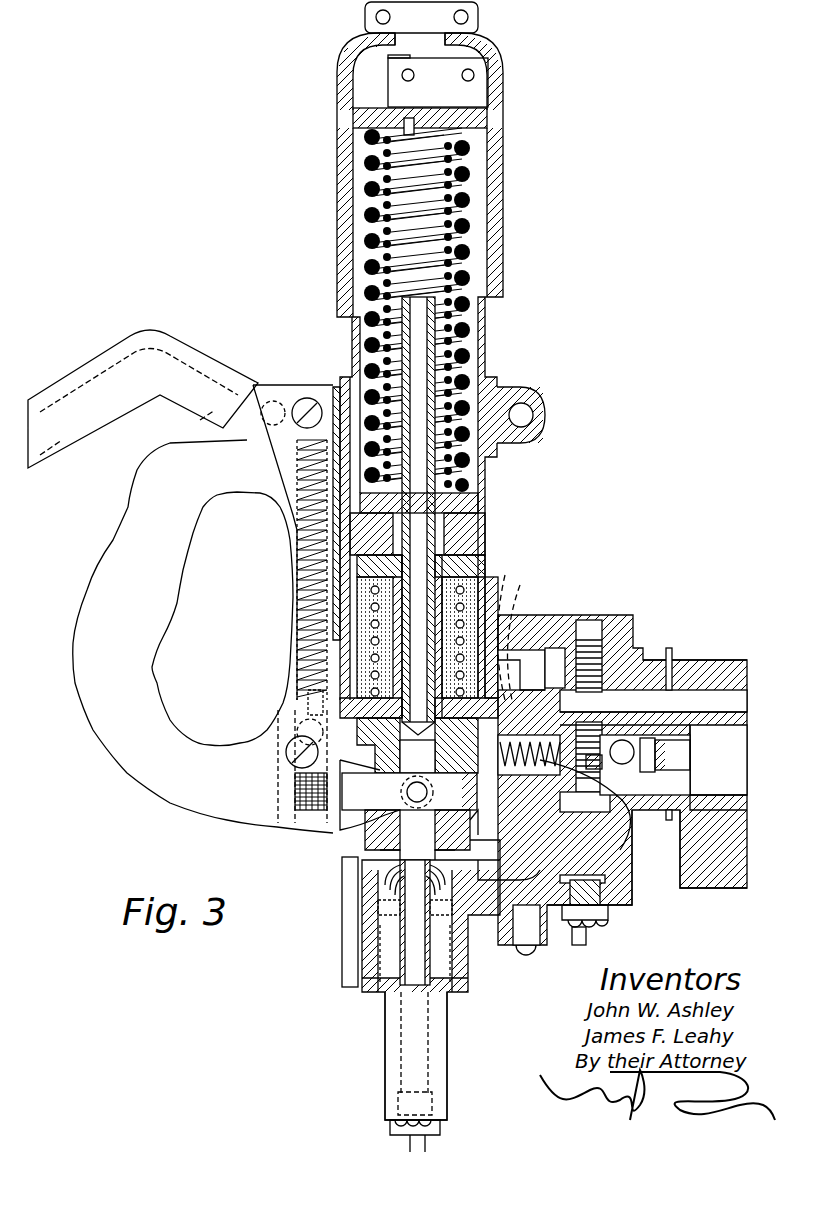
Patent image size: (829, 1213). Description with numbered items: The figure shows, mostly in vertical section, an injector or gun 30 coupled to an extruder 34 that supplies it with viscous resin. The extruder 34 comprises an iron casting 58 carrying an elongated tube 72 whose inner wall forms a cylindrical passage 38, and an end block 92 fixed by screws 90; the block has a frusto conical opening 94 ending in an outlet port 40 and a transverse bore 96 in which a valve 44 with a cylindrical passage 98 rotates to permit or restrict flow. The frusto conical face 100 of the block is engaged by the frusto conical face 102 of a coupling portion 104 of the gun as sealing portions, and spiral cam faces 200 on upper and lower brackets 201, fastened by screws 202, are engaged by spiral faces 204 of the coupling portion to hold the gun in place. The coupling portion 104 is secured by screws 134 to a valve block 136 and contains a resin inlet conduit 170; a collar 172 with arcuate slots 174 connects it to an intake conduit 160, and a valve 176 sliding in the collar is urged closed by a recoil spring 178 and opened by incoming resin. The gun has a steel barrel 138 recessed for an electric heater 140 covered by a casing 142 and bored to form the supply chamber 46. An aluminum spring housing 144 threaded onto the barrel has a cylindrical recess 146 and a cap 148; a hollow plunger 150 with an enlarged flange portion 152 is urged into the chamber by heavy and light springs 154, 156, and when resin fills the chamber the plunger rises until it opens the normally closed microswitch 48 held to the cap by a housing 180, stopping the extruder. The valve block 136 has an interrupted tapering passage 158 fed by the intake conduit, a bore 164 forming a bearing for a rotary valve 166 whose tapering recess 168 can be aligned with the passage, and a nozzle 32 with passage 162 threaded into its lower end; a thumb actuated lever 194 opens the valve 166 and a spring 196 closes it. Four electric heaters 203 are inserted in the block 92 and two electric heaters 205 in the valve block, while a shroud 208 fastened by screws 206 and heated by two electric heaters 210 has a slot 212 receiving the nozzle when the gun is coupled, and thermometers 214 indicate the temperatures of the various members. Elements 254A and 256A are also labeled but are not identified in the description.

The injector or gun 30 is at (548, 373).
The nozzle 32 is at (400, 935).
The extruder 34 is at (733, 616).
The passage 38 is at (747, 725).
The outlet port 40 is at (665, 753).
The valve 44 is at (600, 748).
The supply chamber 46 is at (478, 575).
The microswitch 48 is at (400, 127).
The iron casting 58 is at (747, 888).
The elongated tube 72 is at (748, 790).
The screws 90 is at (747, 690).
The end block 92 is at (650, 655).
The frusto conical opening 94 is at (672, 775).
The bore 96 is at (630, 760).
The cylindrical passage 98 is at (610, 752).
The frusto conical face 100 is at (545, 805).
The frusto conical face 102 is at (580, 715).
The coupling portion 104 is at (500, 660).
The screws 134 is at (490, 615).
The valve block 136 is at (431, 965).
The steel barrel 138 is at (360, 590).
The electric heater 140 is at (362, 622).
The casing 142 is at (362, 650).
The aluminum spring housing 144 is at (488, 290).
The cylindrical recess 146 is at (478, 315).
The cap 148 is at (490, 160).
The hollow plunger 150 is at (478, 552).
The enlarged flange portion 152 is at (455, 508).
The heavy spring 154 is at (470, 225).
The light spring 156 is at (380, 270).
The interrupted tapering passage 158 is at (360, 745).
The intake conduit 160 is at (345, 795).
The passage 162 is at (402, 893).
The bore 164 is at (395, 862).
The rotary valve 166 is at (375, 812).
The tapering recess 168 is at (372, 848).
The resin inlet conduit 170 is at (583, 653).
The collar 172 is at (485, 850).
The arcuate slots 174 is at (480, 830).
The valve 176 is at (600, 829).
The recoil spring 178 is at (590, 792).
The housing 180 is at (488, 80).
The thumb actuated lever 194 is at (115, 345).
The spring 196 is at (297, 460).
The spiral cam faces 200 is at (585, 645).
The upper and lower brackets 201 is at (558, 615).
The screws 202 is at (605, 618).
The electric heaters 203 is at (700, 660).
The spiral faces 204 is at (545, 655).
The electric heaters 205 is at (288, 746).
The screws 206 is at (515, 945).
The shroud 208 is at (362, 980).
The electric heaters 210 is at (430, 978).
The slot 212 is at (445, 962).
The thermometers 214 is at (385, 725).
The adjusting screw 254A is at (585, 932).
The outlet 256A is at (400, 1047).